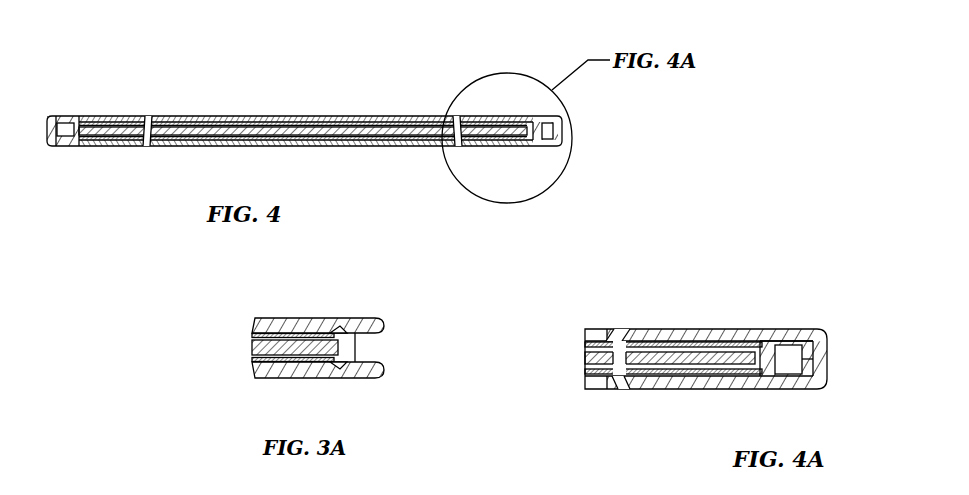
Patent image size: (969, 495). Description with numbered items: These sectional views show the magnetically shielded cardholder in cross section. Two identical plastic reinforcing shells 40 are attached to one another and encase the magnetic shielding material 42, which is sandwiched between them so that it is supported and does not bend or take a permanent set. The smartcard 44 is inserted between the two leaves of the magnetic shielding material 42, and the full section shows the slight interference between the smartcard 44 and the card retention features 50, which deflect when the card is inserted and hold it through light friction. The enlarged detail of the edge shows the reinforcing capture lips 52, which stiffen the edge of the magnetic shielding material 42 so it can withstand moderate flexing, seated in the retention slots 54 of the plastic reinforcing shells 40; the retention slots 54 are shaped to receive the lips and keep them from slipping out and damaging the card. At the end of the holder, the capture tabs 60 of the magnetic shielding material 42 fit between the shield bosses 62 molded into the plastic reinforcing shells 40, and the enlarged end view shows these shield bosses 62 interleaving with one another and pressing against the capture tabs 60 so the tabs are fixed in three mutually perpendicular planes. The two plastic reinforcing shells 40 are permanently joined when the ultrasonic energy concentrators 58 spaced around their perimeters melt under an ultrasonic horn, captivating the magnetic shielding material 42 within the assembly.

In FIG. 4, the plastic reinforcing shell 40 is at (304, 151).
In FIG. 3A, the plastic reinforcing shell 40 is at (293, 344).
In FIG. 4A, the plastic reinforcing shell 40 is at (706, 332).
In FIG. 4, the magnetic shielding material 42 is at (395, 85).
In FIG. 4A, the magnetic shielding material 42 is at (795, 390).
In FIG. 4, the smartcard 44 is at (303, 98).
In FIG. 3A, the smartcard 44 is at (242, 361).
In FIG. 4A, the smartcard 44 is at (686, 334).
In FIG. 4, the card retention feature 50 is at (302, 116).
In FIG. 4A, the card retention feature 50 is at (681, 340).
In FIG. 3A, the reinforcing capture lip 52 is at (355, 354).
In FIG. 3A, the retention slot 54 is at (385, 366).
In FIG. 4A, the ultrasonic energy concentrator 58 is at (858, 373).
In FIG. 4, the capture tab 60 is at (103, 163).
In FIG. 4A, the capture tab 60 is at (827, 312).
In FIG. 4, the shield boss 62 is at (104, 100).
In FIG. 4A, the shield boss 62 is at (844, 350).